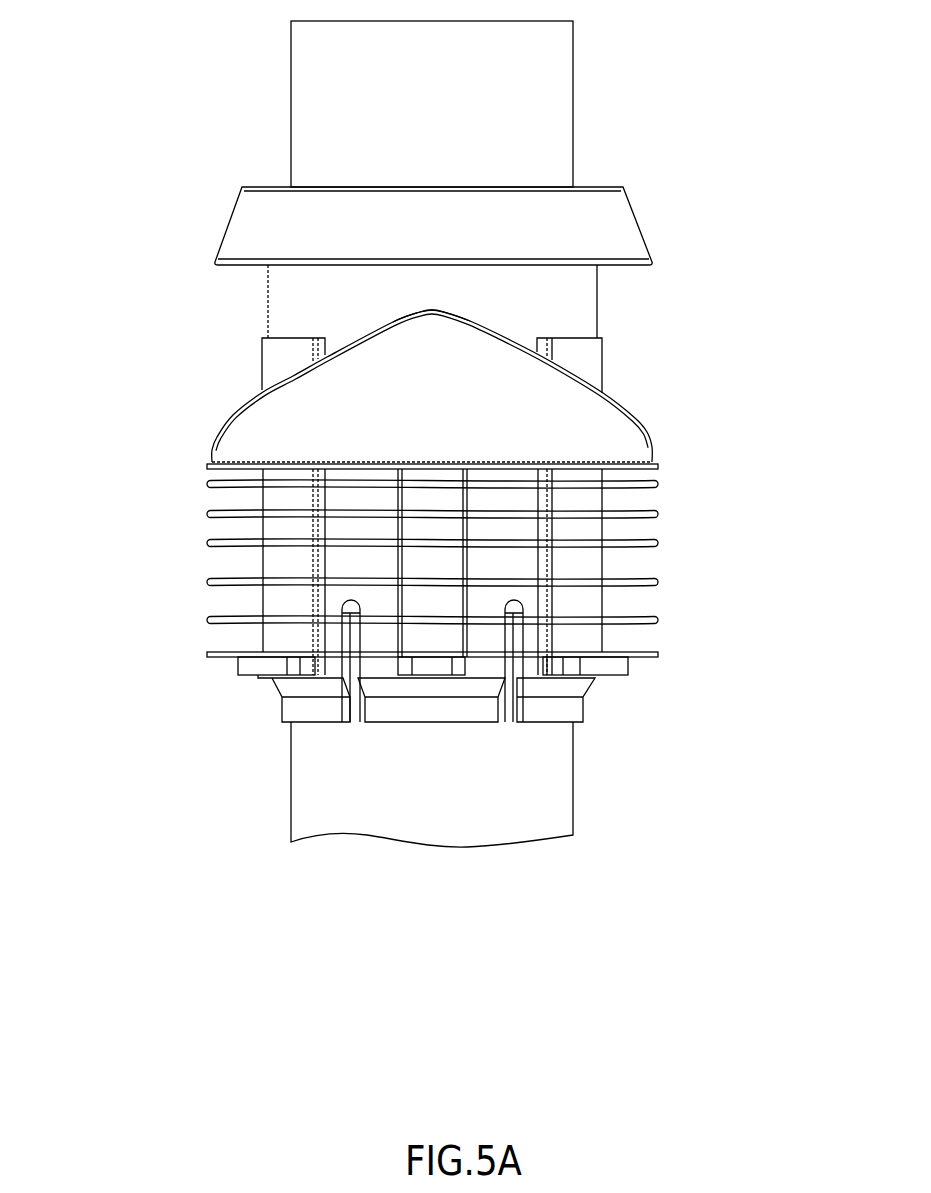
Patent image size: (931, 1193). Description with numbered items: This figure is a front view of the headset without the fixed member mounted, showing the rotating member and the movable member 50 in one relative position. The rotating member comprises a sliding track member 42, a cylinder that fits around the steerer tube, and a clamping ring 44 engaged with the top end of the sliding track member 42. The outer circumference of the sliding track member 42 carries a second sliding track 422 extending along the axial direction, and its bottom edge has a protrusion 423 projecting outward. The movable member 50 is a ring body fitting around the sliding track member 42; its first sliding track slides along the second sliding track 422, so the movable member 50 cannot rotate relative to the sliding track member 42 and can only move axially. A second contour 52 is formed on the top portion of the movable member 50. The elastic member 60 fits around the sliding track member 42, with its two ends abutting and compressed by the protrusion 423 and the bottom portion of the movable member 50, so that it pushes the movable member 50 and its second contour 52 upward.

The clamping ring 44 is at (605, 217).
The sliding track member 42 is at (573, 305).
The second sliding track 422 is at (585, 358).
The protrusion 423 is at (608, 665).
The movable member 50 is at (213, 443).
The second contour 52 is at (393, 322).
The elastic member 60 is at (660, 545).